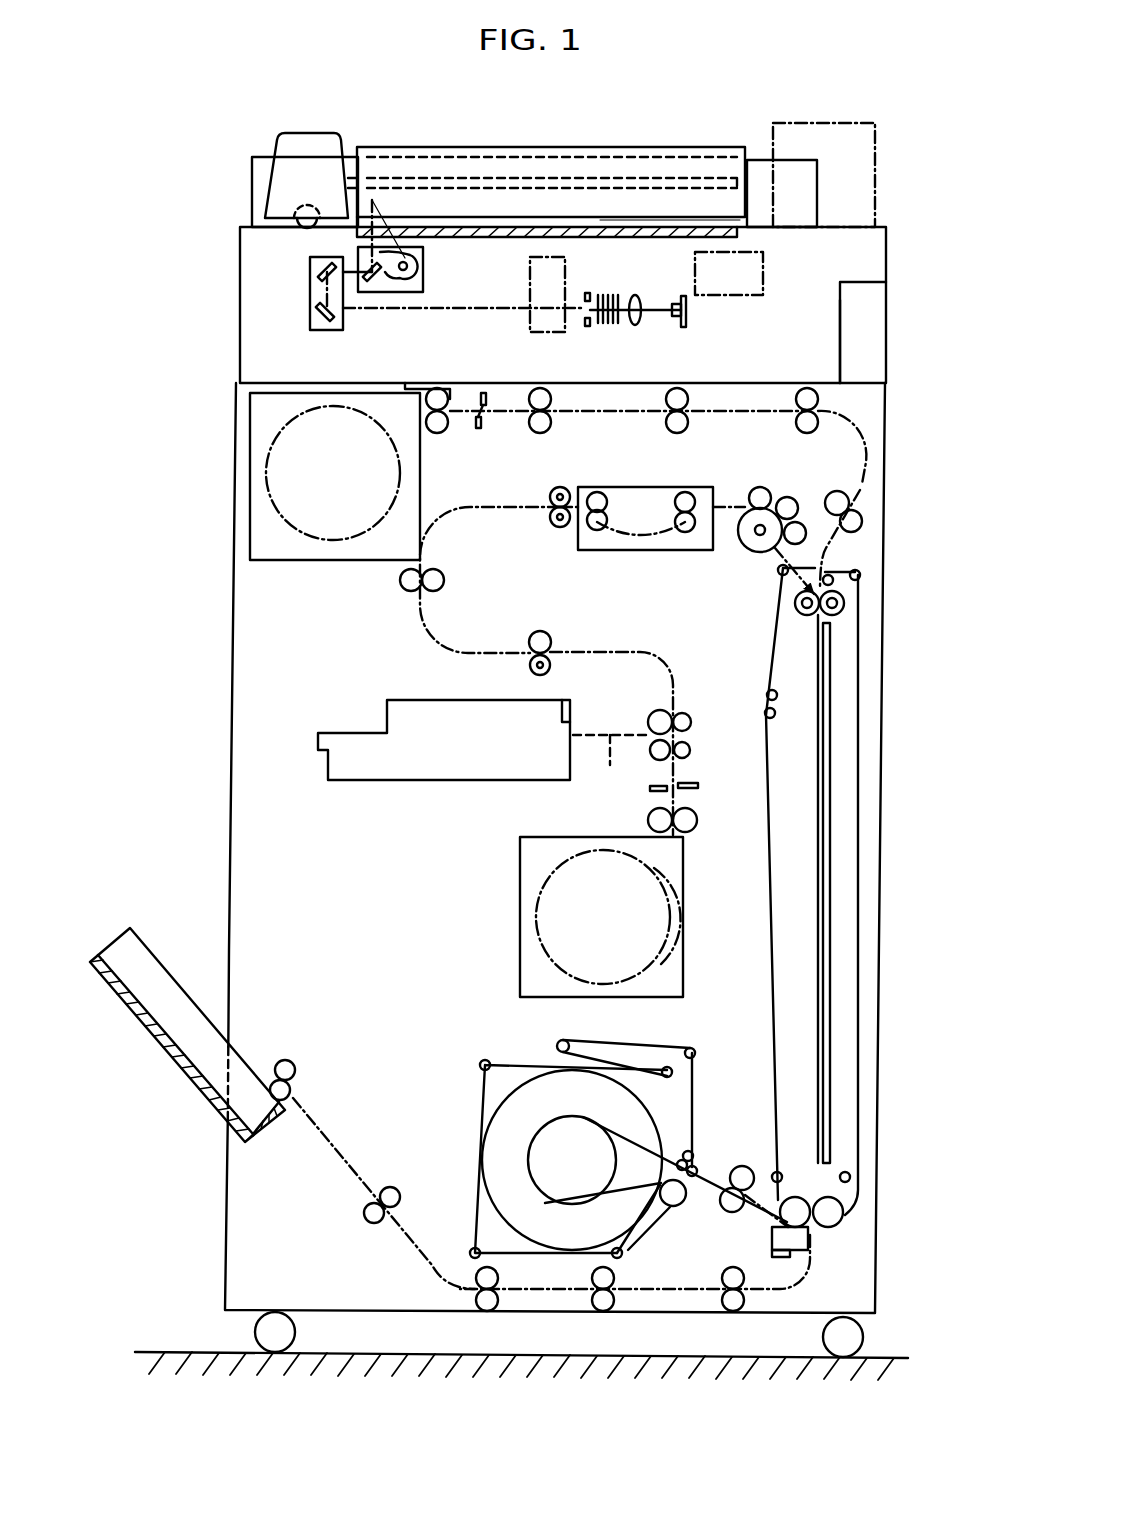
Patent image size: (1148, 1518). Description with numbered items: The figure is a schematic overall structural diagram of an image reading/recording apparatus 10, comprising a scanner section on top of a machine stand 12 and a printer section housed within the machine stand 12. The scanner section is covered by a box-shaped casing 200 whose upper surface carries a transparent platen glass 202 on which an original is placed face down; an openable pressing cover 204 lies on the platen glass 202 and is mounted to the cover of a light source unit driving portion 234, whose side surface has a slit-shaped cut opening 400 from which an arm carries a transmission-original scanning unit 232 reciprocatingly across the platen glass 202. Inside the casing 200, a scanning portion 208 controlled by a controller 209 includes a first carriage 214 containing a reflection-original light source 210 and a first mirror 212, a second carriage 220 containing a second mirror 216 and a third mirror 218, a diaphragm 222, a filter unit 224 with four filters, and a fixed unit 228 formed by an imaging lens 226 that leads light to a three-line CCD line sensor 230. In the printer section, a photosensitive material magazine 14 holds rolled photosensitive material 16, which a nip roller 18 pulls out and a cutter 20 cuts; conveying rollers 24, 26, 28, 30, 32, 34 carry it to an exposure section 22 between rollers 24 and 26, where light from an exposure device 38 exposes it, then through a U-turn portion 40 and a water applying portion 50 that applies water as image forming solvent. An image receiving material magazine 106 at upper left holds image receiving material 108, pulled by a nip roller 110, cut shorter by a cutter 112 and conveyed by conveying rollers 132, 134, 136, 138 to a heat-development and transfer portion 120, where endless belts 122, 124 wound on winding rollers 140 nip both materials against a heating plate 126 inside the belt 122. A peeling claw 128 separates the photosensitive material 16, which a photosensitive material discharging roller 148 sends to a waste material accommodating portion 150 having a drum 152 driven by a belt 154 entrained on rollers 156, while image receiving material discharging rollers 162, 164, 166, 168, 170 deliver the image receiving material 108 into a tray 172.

The image reading/recording apparatus 10 is at (205, 372).
The machine stand 12 is at (234, 572).
The photosensitive material magazine 14 is at (520, 957).
The photosensitive material 16 is at (556, 872).
The nip roller 18 is at (697, 820).
The cutter 20 is at (700, 786).
The exposure section 22 is at (700, 735).
The conveying roller 24 is at (692, 750).
The conveying roller 26 is at (684, 712).
The conveying roller 28 is at (548, 640).
The conveying roller 30 is at (440, 592).
The conveying roller 32 is at (555, 530).
The conveying roller 34 is at (798, 500).
The exposure device 38 is at (405, 780).
The U-turn portion 40 is at (420, 628).
The water applying portion 50 is at (668, 572).
The image receiving material magazine 106 is at (250, 487).
The image receiving material 108 is at (330, 540).
The nip roller 110 is at (437, 389).
The cutter 112 is at (480, 428).
The heat-development and transfer portion 120 is at (825, 890).
The endless belt 122 is at (858, 795).
The endless belt 124 is at (775, 882).
The heating plate 126 is at (830, 735).
The peeling claw 128 is at (772, 1238).
The conveying roller 132 is at (548, 390).
The conveying roller 134 is at (683, 430).
The conveying roller 136 is at (800, 432).
The conveying roller 138 is at (860, 522).
The winding rollers 140 is at (800, 618).
The photosensitive material discharging roller 148 is at (742, 1166).
The waste material accommodating portion 150 is at (584, 1155).
The drum 152 is at (598, 1167).
The belt 154 is at (482, 1140).
The rollers 156 is at (688, 1053).
The image receiving material discharging roller 162 is at (742, 1310).
The image receiving material discharging roller 164 is at (612, 1310).
The image receiving material discharging roller 166 is at (496, 1310).
The image receiving material discharging roller 168 is at (370, 1225).
The image receiving material discharging roller 170 is at (295, 1062).
The tray 172 is at (140, 1012).
The casing 200 is at (880, 252).
The platen glass 202 is at (607, 226).
The pressing cover 204 is at (530, 147).
The scanning portion 208 is at (742, 347).
The controller 209 is at (878, 333).
The reflection-original light source 210 is at (423, 262).
The first mirror 212 is at (376, 292).
The first carriage 214 is at (425, 286).
The second mirror 216 is at (322, 268).
The third mirror 218 is at (324, 330).
The second carriage 220 is at (308, 300).
The diaphragm 222 is at (588, 292).
The filter unit 224 is at (612, 290).
The imaging lens 226 is at (640, 322).
The fixed unit 228 is at (660, 292).
The CCD line sensor 230 is at (690, 318).
The transmission-original scanning unit 232 is at (330, 130).
The light source unit driving portion 234 is at (262, 157).
The cut opening 400 is at (350, 185).